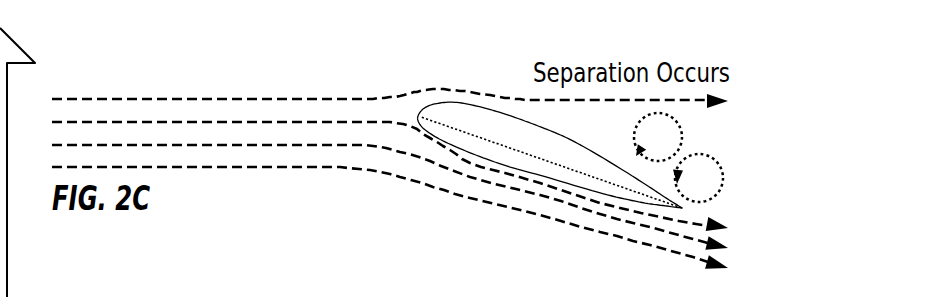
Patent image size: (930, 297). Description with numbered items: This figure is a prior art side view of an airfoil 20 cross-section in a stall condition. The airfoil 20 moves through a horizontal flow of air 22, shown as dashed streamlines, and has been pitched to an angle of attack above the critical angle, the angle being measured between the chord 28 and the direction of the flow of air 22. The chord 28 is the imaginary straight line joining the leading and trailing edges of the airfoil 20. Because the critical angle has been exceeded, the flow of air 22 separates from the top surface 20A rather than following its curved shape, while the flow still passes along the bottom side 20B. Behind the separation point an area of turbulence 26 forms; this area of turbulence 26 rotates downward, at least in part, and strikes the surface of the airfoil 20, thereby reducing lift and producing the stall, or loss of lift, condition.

The flow of air 22 is at (87, 95).
The airfoil 20 is at (533, 146).
The top surface 20A is at (511, 110).
The bottom side 20B is at (495, 163).
The chord 28 is at (578, 174).
The area of turbulence 26 is at (697, 139).